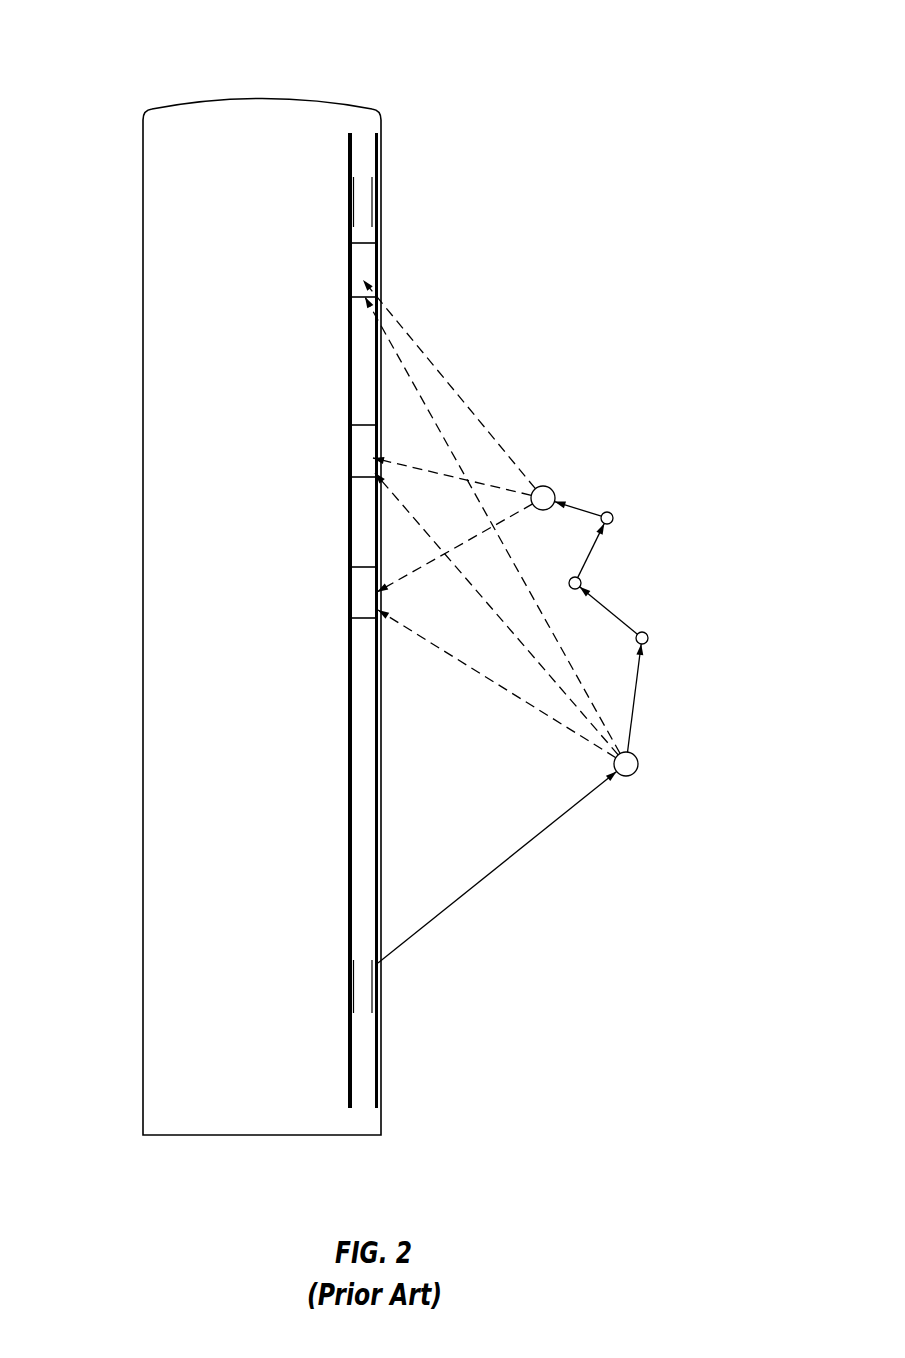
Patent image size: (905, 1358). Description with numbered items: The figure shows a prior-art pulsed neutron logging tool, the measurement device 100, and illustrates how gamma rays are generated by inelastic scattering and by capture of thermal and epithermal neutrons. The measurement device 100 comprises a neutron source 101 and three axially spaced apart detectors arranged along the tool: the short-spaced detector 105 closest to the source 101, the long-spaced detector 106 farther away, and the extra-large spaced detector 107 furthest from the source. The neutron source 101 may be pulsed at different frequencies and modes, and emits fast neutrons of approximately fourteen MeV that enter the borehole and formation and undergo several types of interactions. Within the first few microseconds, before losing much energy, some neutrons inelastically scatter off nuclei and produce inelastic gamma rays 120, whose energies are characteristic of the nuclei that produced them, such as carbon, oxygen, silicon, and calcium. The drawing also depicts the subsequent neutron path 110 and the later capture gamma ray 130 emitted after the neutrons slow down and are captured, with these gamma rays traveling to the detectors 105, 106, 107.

The measurement device 100 is at (130, 45).
The neutron source 101 is at (162, 802).
The short-spaced detector 105 is at (167, 598).
The long-spaced detector 106 is at (167, 455).
The extra-large spaced detector 107 is at (167, 272).
The neutron scattering path 110 is at (585, 563).
The inelastic gamma rays 120 is at (573, 698).
The capture gamma ray source point 130 is at (498, 527).